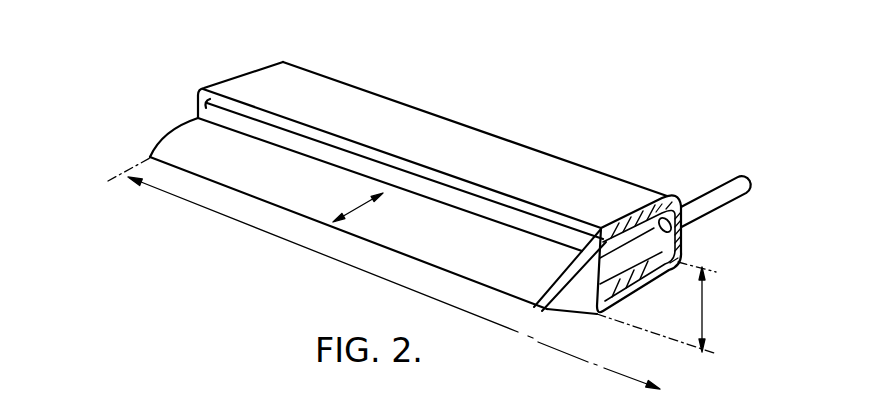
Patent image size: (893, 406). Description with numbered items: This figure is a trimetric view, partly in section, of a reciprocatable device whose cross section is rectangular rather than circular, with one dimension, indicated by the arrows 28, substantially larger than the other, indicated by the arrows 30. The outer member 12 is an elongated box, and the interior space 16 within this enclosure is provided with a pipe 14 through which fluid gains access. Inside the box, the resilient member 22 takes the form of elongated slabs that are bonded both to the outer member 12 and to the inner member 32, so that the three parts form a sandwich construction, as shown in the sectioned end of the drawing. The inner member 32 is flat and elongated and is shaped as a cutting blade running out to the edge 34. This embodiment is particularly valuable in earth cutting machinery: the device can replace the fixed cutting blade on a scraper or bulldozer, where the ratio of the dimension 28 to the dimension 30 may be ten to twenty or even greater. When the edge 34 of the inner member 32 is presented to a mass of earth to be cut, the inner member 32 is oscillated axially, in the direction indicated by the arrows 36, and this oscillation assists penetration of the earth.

The outer member 12 is at (423, 117).
The pipe 14 is at (708, 202).
The interior space 16 is at (667, 243).
The resilient member 22 is at (631, 287).
The dimension 28 is at (365, 273).
The dimension 30 is at (672, 307).
The inner member 32 is at (198, 140).
The edge 34 is at (523, 304).
The arrows 36 is at (360, 207).